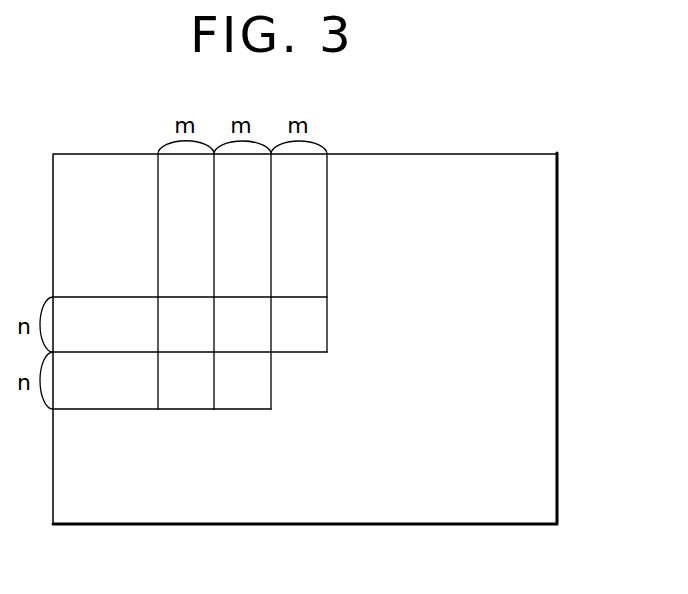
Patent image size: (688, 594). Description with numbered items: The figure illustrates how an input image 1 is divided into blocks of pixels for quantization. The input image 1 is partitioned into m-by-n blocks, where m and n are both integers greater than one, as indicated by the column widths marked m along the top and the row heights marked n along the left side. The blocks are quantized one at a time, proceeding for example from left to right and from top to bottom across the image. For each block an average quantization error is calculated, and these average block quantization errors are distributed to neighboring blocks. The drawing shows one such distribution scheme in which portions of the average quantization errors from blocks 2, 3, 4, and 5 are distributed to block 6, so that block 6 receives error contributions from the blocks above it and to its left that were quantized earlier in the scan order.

The input image 1 is at (558, 184).
The block 2 is at (184, 299).
The block 3 is at (244, 299).
The block 4 is at (327, 319).
The block 5 is at (187, 403).
The block 6 is at (247, 403).